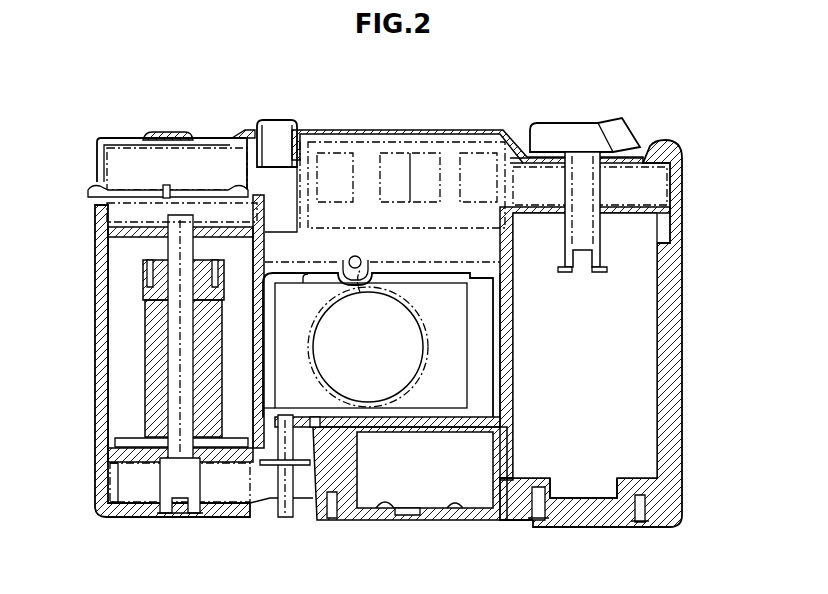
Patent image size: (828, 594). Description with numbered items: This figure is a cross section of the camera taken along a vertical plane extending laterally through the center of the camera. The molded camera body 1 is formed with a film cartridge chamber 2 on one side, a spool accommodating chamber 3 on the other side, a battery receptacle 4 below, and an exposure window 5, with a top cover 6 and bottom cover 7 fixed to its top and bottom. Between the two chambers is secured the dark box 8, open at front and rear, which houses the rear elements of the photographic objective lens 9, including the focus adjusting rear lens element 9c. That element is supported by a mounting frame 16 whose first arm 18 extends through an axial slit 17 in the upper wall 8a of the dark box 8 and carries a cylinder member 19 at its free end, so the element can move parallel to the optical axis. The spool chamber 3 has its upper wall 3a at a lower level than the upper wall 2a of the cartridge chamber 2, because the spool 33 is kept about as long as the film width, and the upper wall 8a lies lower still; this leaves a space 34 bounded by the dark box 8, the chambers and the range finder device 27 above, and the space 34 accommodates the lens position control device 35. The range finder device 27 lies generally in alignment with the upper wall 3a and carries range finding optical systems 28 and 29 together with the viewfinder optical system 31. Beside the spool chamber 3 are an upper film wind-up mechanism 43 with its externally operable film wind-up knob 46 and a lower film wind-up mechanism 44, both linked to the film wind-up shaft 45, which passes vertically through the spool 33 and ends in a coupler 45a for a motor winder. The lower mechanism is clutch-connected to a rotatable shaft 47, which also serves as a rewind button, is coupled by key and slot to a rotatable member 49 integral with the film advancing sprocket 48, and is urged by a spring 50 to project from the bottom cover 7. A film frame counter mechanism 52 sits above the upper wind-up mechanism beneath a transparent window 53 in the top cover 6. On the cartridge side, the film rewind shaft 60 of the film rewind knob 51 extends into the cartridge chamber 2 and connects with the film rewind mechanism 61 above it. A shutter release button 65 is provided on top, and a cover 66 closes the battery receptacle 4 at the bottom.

The camera body 1 is at (660, 328).
The film cartridge chamber 2 is at (650, 335).
The upper wall of cartridge chamber 2a is at (530, 198).
The spool accommodating chamber 3 is at (113, 278).
The upper wall of spool chamber 3a is at (127, 232).
The battery receptacle 4 is at (428, 482).
The exposure window 5 is at (280, 318).
The top cover 6 is at (498, 128).
The bottom cover 7 is at (570, 522).
The dark box 8 is at (497, 332).
The upper wall of dark box 8a is at (434, 262).
The photographic objective lens 9 is at (433, 337).
The rear lens element 9c is at (384, 359).
The mounting frame 16 is at (427, 360).
The axial slit 17 is at (353, 283).
The first arm 18 is at (346, 258).
The cylinder member 19 is at (364, 258).
The range finder device 27 is at (360, 142).
The range finding optical system 28 is at (330, 160).
The range finding optical system 29 is at (480, 157).
The viewfinder optical system 31 is at (433, 153).
The spool 33 is at (152, 342).
The space 34 is at (310, 268).
The lens position control device 35 is at (412, 233).
The upper film wind-up mechanism 43 is at (115, 210).
The lower film wind-up mechanism 44 is at (127, 472).
The film wind-up shaft 45 is at (177, 370).
The coupler 45a is at (182, 488).
The film wind-up knob 46 is at (88, 192).
The rotatable shaft 47 is at (287, 517).
The film advancing sprocket 48 is at (313, 417).
The rotatable member 49 is at (265, 412).
The spring 50 is at (303, 453).
The film rewind knob 51 is at (572, 140).
The film frame counter mechanism 52 is at (118, 168).
The transparent window 53 is at (165, 133).
The film rewind shaft 60 is at (590, 237).
The film rewind mechanism 61 is at (660, 168).
The shutter release button 65 is at (270, 127).
The cover for battery receptacle 66 is at (407, 513).